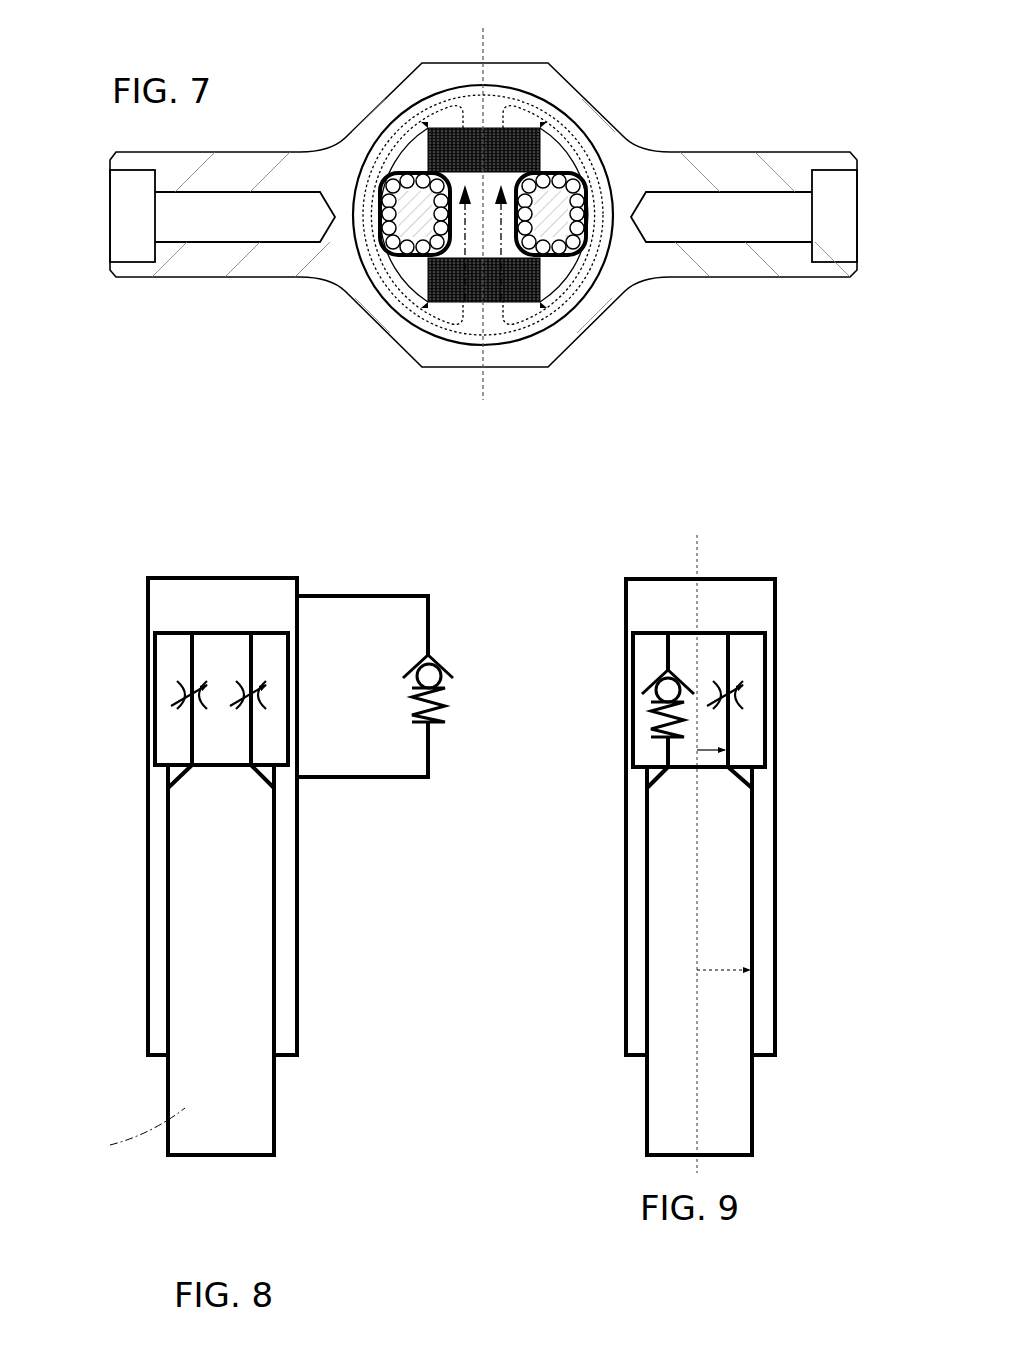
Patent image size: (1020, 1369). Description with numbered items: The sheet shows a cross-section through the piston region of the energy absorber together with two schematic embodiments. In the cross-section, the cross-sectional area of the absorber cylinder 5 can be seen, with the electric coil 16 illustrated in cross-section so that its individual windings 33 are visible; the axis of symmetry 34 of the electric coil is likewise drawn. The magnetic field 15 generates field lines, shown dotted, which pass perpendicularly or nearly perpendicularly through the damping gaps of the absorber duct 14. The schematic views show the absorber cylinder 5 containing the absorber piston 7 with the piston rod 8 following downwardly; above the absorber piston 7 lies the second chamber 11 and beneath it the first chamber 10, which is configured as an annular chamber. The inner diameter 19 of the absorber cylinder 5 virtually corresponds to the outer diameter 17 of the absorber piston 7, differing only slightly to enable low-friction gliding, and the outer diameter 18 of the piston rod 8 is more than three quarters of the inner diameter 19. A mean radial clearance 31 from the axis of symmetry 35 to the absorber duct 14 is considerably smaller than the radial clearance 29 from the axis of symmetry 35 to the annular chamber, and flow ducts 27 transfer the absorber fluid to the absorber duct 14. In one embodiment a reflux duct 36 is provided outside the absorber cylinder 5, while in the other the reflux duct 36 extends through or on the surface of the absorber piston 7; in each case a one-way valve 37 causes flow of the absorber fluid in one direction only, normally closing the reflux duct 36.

In FIG. 8, the absorber cylinder 5 is at (147, 622).
In FIG. 9, the absorber cylinder 5 is at (777, 618).
In FIG. 8, the absorber piston 7 is at (222, 647).
In FIG. 9, the absorber piston 7 is at (699, 700).
In FIG. 8, the piston rod 8 is at (185, 927).
In FIG. 8, the first chamber 10 is at (147, 855).
In FIG. 9, the first chamber 10 is at (762, 886).
In FIG. 8, the second chamber 11 is at (192, 594).
In FIG. 9, the second chamber 11 is at (735, 600).
In FIG. 7, the absorber duct 14 is at (503, 116).
In FIG. 8, the absorber duct 14 is at (175, 690).
In FIG. 9, the absorber duct 14 is at (732, 665).
In FIG. 7, the magnetic field 15 is at (422, 112).
In FIG. 7, the electric coil 16 is at (398, 284).
In FIG. 8, the outer diameter of the absorber piston 17 is at (287, 770).
In FIG. 8, the outer diameter of the piston rod 18 is at (168, 1160).
In FIG. 8, the inner diameter of the absorber cylinder 19 is at (297, 578).
In FIG. 9, the flow duct 27 is at (740, 775).
In FIG. 9, the radial clearance 29 is at (722, 968).
In FIG. 9, the mean radial clearance 31 is at (715, 752).
In FIG. 7, the windings 33 is at (378, 186).
In FIG. 7, the axis of symmetry of the electric coil 34 is at (487, 52).
In FIG. 9, the axis of symmetry 35 is at (693, 558).
In FIG. 8, the reflux duct 36 is at (668, 650).
In FIG. 9, the reflux duct 36 is at (668, 650).
In FIG. 8, the one-way valve 37 is at (647, 676).
In FIG. 9, the one-way valve 37 is at (647, 676).